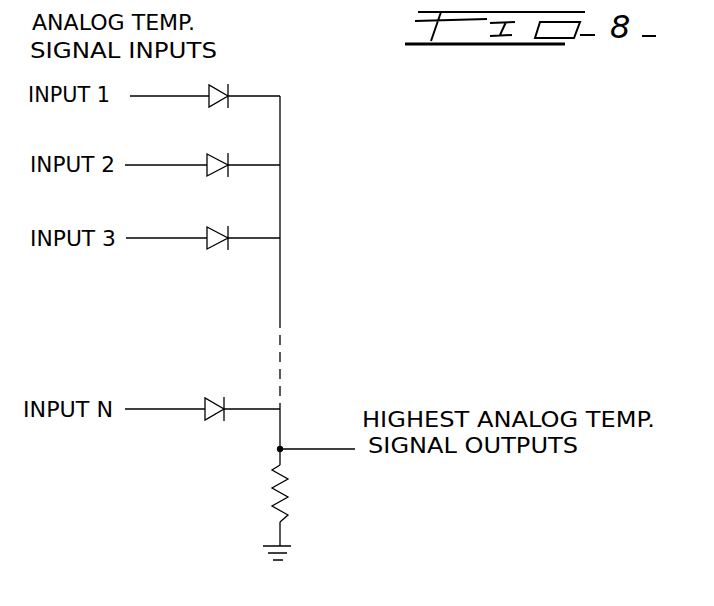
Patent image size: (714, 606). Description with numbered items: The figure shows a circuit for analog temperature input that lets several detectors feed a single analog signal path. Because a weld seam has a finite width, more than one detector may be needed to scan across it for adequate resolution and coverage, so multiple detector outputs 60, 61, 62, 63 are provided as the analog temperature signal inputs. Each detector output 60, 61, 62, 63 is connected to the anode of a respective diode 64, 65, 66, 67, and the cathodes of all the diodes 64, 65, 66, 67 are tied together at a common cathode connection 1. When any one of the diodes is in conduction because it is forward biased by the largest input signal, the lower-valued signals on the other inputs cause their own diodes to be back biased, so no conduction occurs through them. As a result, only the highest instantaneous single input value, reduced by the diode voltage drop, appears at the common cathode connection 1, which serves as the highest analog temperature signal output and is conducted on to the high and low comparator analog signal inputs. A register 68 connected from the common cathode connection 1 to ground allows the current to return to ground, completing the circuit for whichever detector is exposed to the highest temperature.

The detector output 60 is at (183, 96).
The detector output 61 is at (160, 165).
The detector output 62 is at (147, 238).
The detector output 63 is at (155, 409).
The diode 64 is at (228, 85).
The diode 65 is at (215, 153).
The diode 66 is at (215, 226).
The diode 67 is at (213, 398).
The register 68 is at (272, 493).
The common cathode connection 1 is at (328, 451).